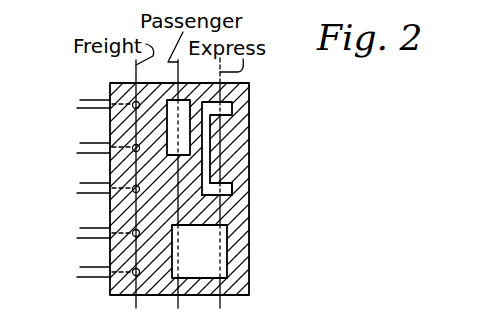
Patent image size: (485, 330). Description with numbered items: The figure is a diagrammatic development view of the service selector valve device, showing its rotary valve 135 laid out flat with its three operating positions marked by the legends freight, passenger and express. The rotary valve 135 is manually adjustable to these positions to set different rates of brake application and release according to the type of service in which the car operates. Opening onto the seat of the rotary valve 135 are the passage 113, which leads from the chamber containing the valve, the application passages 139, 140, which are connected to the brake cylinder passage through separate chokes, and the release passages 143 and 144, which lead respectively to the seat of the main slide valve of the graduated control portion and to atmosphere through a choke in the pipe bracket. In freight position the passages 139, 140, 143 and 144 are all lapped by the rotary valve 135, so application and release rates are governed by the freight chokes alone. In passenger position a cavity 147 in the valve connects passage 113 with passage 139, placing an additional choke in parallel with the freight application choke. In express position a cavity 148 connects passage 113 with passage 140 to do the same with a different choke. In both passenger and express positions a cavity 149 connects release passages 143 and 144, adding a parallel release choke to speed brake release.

The passage 113 is at (77, 108).
The application passage 139 is at (77, 153).
The application passage 140 is at (77, 193).
The release passage 143 is at (77, 238).
The release passage 144 is at (77, 277).
The rotary valve 135 is at (243, 111).
The cavity 147 is at (186, 133).
The cavity 148 is at (228, 188).
The cavity 149 is at (212, 251).